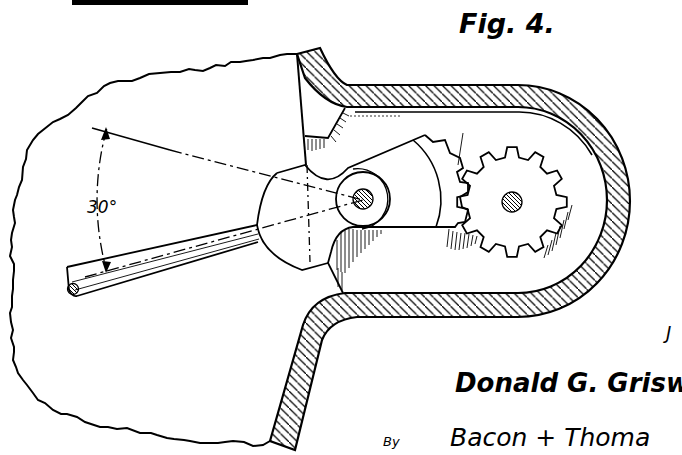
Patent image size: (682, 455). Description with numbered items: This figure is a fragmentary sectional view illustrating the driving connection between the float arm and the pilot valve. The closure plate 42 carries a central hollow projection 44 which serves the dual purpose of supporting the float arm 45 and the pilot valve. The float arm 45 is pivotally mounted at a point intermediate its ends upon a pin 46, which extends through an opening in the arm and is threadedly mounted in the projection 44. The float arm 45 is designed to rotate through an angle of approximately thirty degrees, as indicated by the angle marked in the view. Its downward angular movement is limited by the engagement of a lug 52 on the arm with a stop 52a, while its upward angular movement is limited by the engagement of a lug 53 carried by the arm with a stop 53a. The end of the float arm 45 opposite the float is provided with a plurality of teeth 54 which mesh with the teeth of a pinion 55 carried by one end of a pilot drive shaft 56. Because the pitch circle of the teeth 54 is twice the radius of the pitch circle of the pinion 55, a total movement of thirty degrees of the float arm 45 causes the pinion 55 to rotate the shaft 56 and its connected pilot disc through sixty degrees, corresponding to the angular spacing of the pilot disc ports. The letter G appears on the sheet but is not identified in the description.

The closure plate 42 is at (312, 386).
The central hollow projection 44 is at (630, 190).
The float arm 45 is at (203, 258).
The pin 46 is at (368, 210).
The lug 52 is at (301, 273).
The stop 52a is at (344, 284).
The lug 53 is at (280, 173).
The stop 53a is at (333, 137).
The teeth 54 is at (445, 140).
The pinion 55 is at (489, 248).
The pilot drive shaft 56 is at (519, 212).
The guide bar G is at (160, 3).